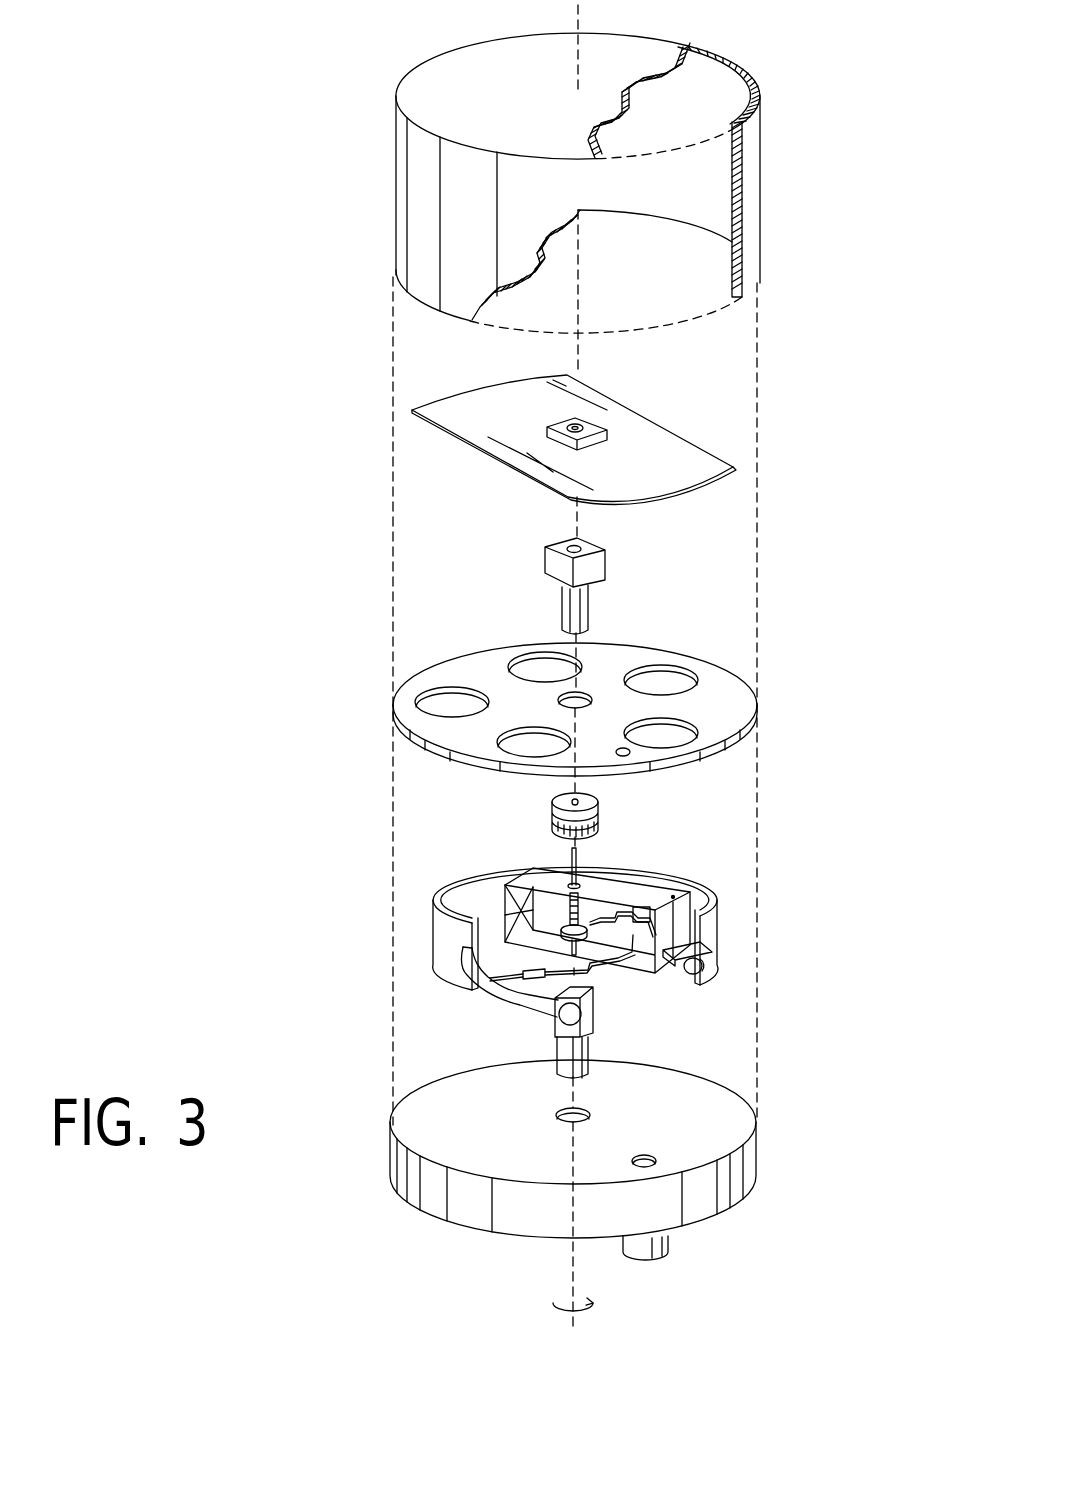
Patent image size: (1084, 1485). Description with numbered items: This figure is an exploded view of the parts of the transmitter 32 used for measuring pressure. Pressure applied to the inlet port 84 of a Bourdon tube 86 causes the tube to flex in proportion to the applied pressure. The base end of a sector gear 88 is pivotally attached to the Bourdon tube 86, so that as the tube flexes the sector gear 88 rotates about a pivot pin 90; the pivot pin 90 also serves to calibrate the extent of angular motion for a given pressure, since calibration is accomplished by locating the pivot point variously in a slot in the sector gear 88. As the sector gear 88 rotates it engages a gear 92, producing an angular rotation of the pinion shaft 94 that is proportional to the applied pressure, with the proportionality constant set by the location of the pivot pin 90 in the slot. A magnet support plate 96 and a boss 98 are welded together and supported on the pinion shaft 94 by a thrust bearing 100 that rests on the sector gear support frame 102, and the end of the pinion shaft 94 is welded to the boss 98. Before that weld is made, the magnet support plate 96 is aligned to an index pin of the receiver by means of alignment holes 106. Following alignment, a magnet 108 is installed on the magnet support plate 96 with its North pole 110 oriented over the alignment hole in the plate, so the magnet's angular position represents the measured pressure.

The transmitter 32 is at (802, 138).
The magnet 108 is at (468, 387).
The North pole 110 is at (642, 470).
The boss 98 is at (604, 552).
The magnet support plate 96 is at (487, 648).
The alignment holes 106 is at (633, 752).
The thrust bearing 100 is at (552, 813).
The pinion shaft 94 is at (567, 855).
The Bourdon tube 86 is at (450, 973).
The sector gear support frame 102 is at (640, 890).
The sector gear 88 is at (610, 920).
The pivot pin 90 is at (642, 965).
The gear 92 is at (507, 893).
The inlet port 84 is at (580, 1068).